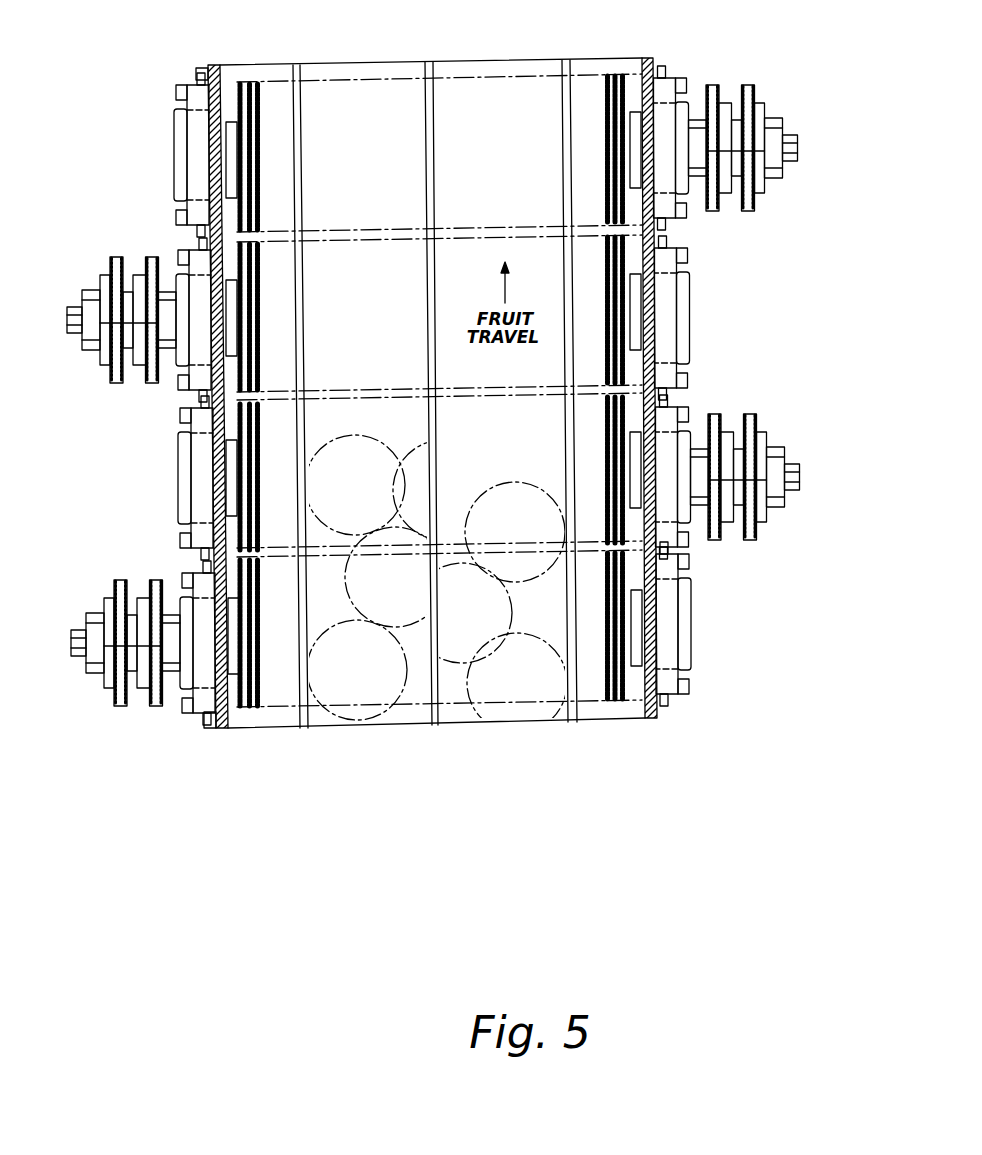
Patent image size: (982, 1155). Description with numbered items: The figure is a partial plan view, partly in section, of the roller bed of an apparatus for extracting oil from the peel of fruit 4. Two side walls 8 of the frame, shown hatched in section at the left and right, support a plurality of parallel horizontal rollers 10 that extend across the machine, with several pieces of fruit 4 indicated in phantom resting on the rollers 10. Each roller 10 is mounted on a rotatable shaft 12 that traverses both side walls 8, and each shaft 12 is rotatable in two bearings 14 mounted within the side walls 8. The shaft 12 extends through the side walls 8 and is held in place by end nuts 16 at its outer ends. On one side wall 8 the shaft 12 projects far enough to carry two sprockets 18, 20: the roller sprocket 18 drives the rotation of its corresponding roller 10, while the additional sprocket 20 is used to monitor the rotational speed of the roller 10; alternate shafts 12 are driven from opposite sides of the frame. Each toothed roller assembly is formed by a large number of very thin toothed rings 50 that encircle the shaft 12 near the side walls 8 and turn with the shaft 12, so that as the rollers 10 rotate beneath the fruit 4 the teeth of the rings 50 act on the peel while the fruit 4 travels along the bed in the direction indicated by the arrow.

The fruit 4 is at (368, 435).
The side wall 8 is at (208, 733).
The horizontal roller 10 is at (340, 230).
The rotatable shaft 12 is at (167, 340).
The bearing 14 is at (203, 153).
The end nut 16 is at (67, 321).
The roller sprocket 18 is at (150, 257).
The additional sprocket 20 is at (116, 256).
The toothed ring 50 is at (241, 84).